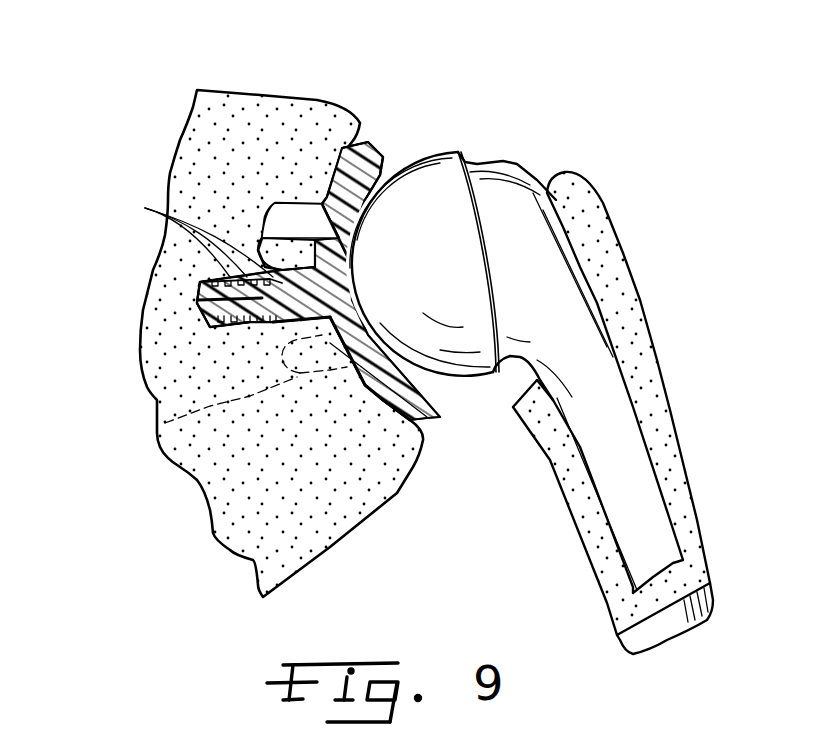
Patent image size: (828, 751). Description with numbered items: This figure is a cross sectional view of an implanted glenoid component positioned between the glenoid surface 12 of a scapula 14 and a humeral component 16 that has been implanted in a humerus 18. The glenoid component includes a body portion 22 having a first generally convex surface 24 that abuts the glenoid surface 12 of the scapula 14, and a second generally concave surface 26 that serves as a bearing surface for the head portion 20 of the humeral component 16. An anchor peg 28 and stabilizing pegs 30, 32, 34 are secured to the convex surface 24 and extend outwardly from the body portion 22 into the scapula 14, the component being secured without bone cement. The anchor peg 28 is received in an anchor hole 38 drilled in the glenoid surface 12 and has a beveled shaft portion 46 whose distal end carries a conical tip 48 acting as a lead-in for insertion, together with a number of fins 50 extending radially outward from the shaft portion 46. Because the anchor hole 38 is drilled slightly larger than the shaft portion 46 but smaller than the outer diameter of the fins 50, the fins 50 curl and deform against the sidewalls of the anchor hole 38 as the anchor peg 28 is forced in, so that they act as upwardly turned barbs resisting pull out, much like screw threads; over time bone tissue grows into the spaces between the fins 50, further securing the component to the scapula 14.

The glenoid surface 12 is at (437, 420).
The scapula 14 is at (250, 122).
The humeral component 16 is at (507, 190).
The humerus 18 is at (627, 337).
The head portion 20 is at (427, 180).
The body portion 22 is at (368, 157).
The first generally convex surface 24 is at (342, 155).
The second generally concave surface 26 is at (390, 165).
The anchor peg 28 is at (280, 326).
The stabilizing peg 30 is at (292, 203).
The stabilizing peg 32 is at (195, 394).
The stabilizing peg 34 is at (165, 423).
The anchor hole 38 is at (225, 283).
The beveled shaft portion 46 is at (288, 268).
The conical tip 48 is at (200, 303).
The fins 50 is at (190, 235).